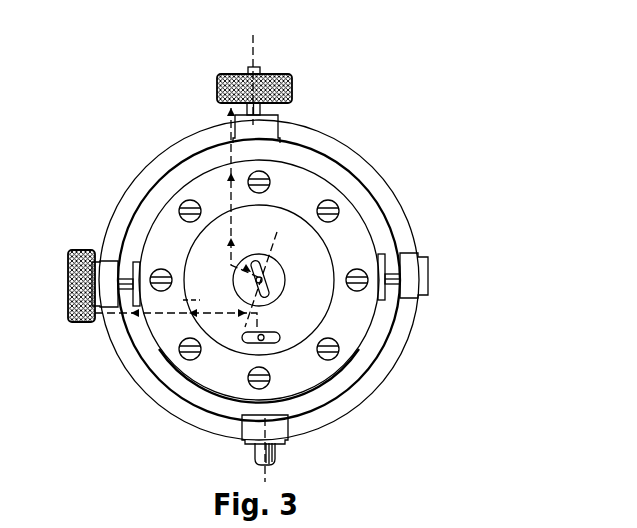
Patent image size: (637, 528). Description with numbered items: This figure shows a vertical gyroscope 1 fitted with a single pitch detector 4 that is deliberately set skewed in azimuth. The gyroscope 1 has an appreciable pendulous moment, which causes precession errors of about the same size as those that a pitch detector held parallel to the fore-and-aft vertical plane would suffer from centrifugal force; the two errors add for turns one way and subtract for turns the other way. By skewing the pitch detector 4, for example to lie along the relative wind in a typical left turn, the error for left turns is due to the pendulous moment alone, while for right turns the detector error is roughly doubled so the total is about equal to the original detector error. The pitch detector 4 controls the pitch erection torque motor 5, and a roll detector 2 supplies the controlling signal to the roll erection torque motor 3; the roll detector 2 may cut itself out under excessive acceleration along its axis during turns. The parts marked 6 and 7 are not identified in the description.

The vertical gyroscope 1 is at (298, 318).
The roll detector 2 is at (245, 336).
The roll erection torque motor 3 is at (74, 250).
The pitch detector 4 is at (250, 284).
The pitch erection torque motor 5 is at (292, 90).
The tilted slot 6 is at (270, 258).
The locating pin 7 is at (272, 466).